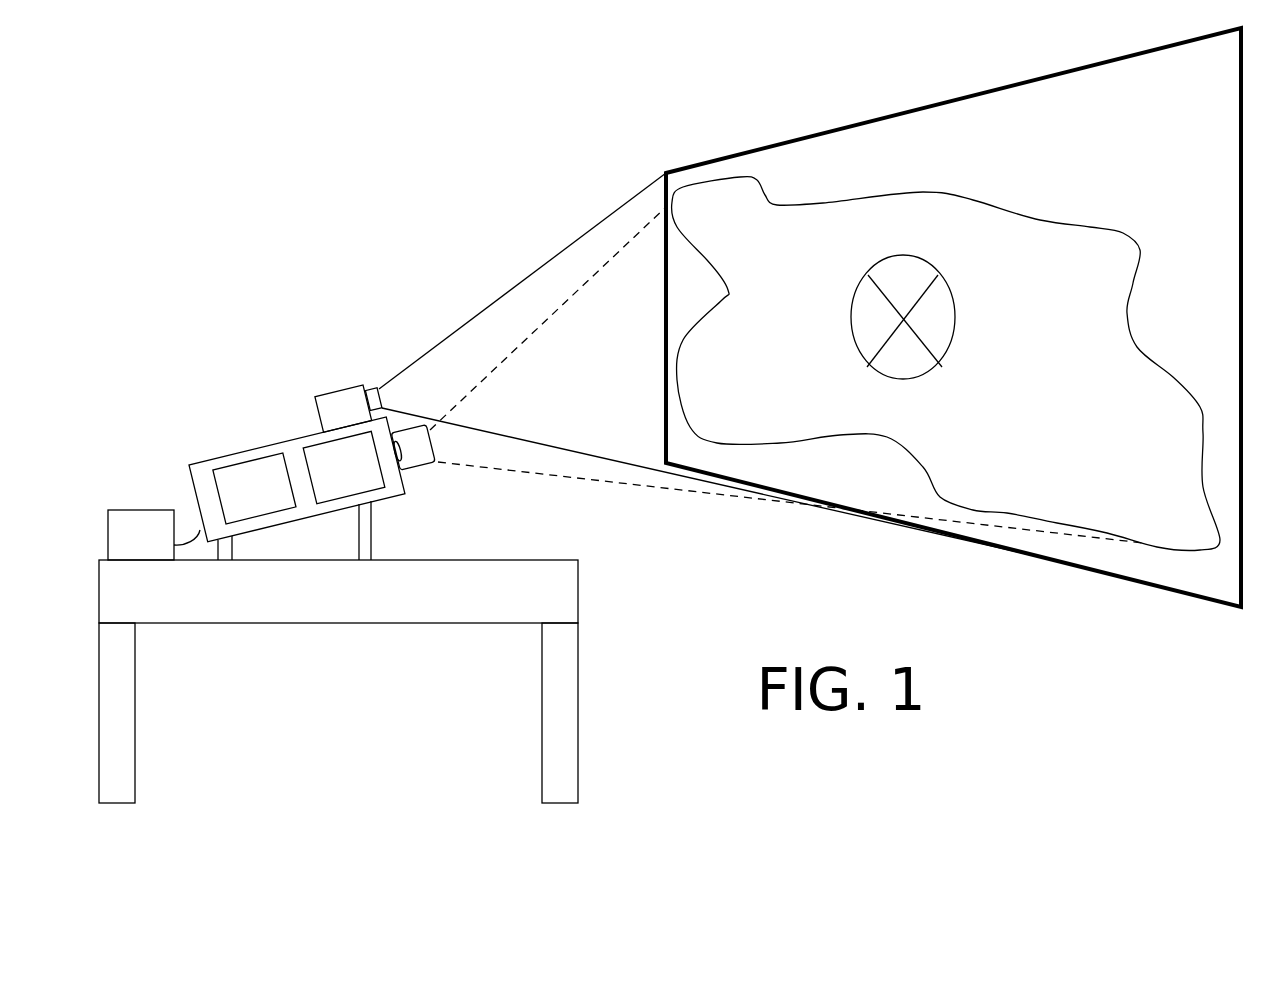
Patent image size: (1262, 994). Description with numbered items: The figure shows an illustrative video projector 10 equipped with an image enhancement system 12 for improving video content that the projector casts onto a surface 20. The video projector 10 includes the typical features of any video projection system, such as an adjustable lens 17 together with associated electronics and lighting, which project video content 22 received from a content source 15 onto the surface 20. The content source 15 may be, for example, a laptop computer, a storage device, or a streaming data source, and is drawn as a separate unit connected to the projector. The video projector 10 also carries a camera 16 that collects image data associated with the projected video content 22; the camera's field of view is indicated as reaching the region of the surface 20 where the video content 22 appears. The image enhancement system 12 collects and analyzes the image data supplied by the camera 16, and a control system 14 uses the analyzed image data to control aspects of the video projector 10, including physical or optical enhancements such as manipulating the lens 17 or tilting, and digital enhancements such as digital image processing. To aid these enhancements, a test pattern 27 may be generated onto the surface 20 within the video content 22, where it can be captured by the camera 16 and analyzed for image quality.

The video projector 10 is at (268, 361).
The image enhancement system 12 is at (229, 492).
The control system 14 is at (319, 468).
The content source 15 is at (120, 540).
The camera 16 is at (347, 385).
The adjustable lens 17 is at (418, 462).
The surface 20 is at (1121, 146).
The video content 22 is at (756, 258).
The test pattern 27 is at (892, 302).